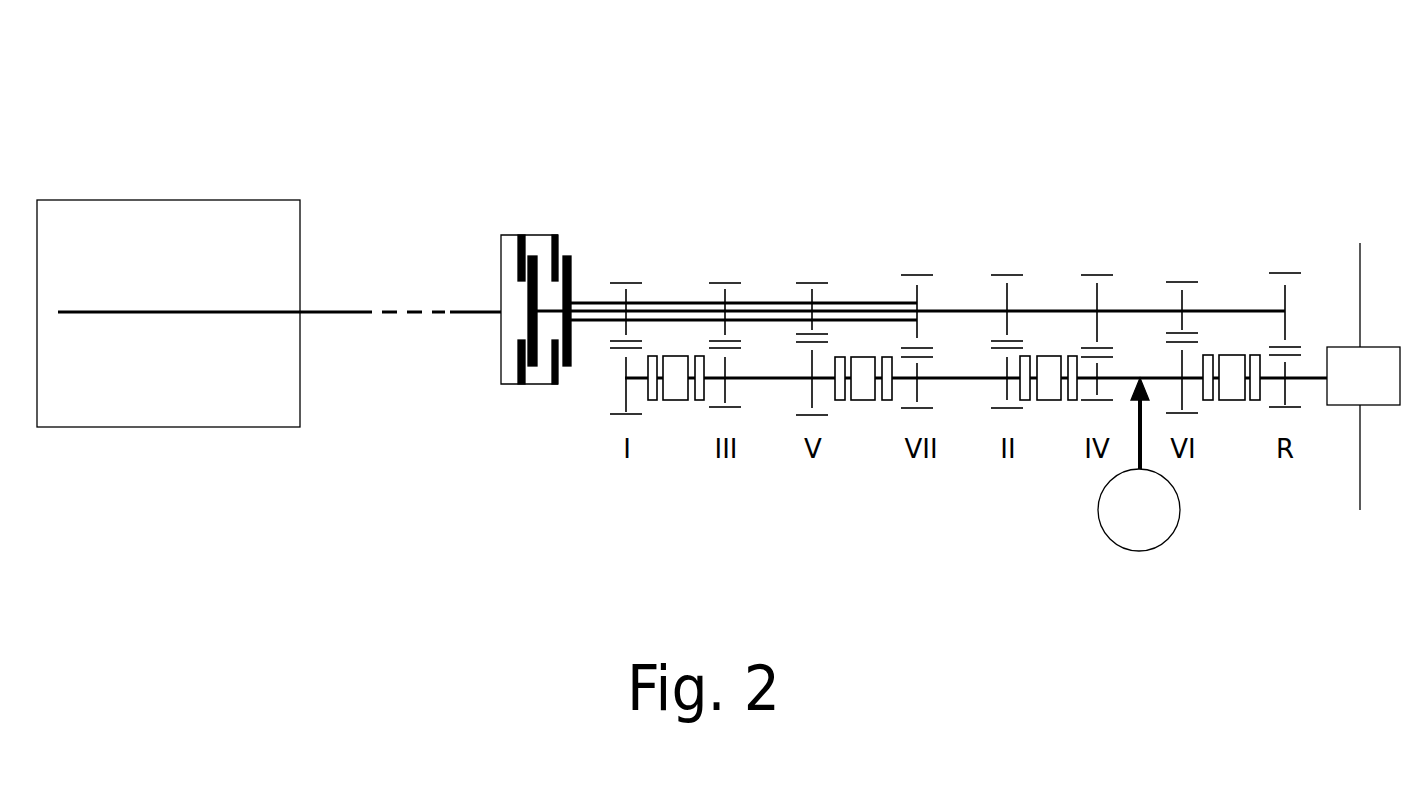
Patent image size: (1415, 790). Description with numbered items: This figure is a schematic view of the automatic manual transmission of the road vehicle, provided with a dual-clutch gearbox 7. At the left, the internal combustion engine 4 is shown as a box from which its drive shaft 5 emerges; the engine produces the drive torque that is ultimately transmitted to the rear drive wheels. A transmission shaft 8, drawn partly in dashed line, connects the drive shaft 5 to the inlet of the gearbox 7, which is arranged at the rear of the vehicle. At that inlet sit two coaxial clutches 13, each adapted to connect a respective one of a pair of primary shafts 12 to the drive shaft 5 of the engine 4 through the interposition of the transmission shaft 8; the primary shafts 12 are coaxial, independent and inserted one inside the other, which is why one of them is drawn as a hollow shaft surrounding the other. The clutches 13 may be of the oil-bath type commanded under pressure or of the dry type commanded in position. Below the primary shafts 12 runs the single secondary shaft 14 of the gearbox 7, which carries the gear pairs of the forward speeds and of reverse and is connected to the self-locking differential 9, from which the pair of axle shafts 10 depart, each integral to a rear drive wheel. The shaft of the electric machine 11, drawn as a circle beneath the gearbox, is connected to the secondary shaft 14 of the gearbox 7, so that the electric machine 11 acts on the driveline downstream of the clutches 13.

The internal combustion engine 4 is at (128, 237).
The drive shaft 5 is at (220, 314).
The dual-clutch gearbox 7 is at (897, 100).
The transmission shaft 8 is at (452, 311).
The self-locking differential 9 is at (1363, 376).
The axle shafts 10 is at (1360, 283).
The electric machine 11 is at (1139, 464).
The primary shafts 12 is at (585, 303).
The clutches 13 is at (554, 406).
The secondary shaft 14 is at (781, 382).